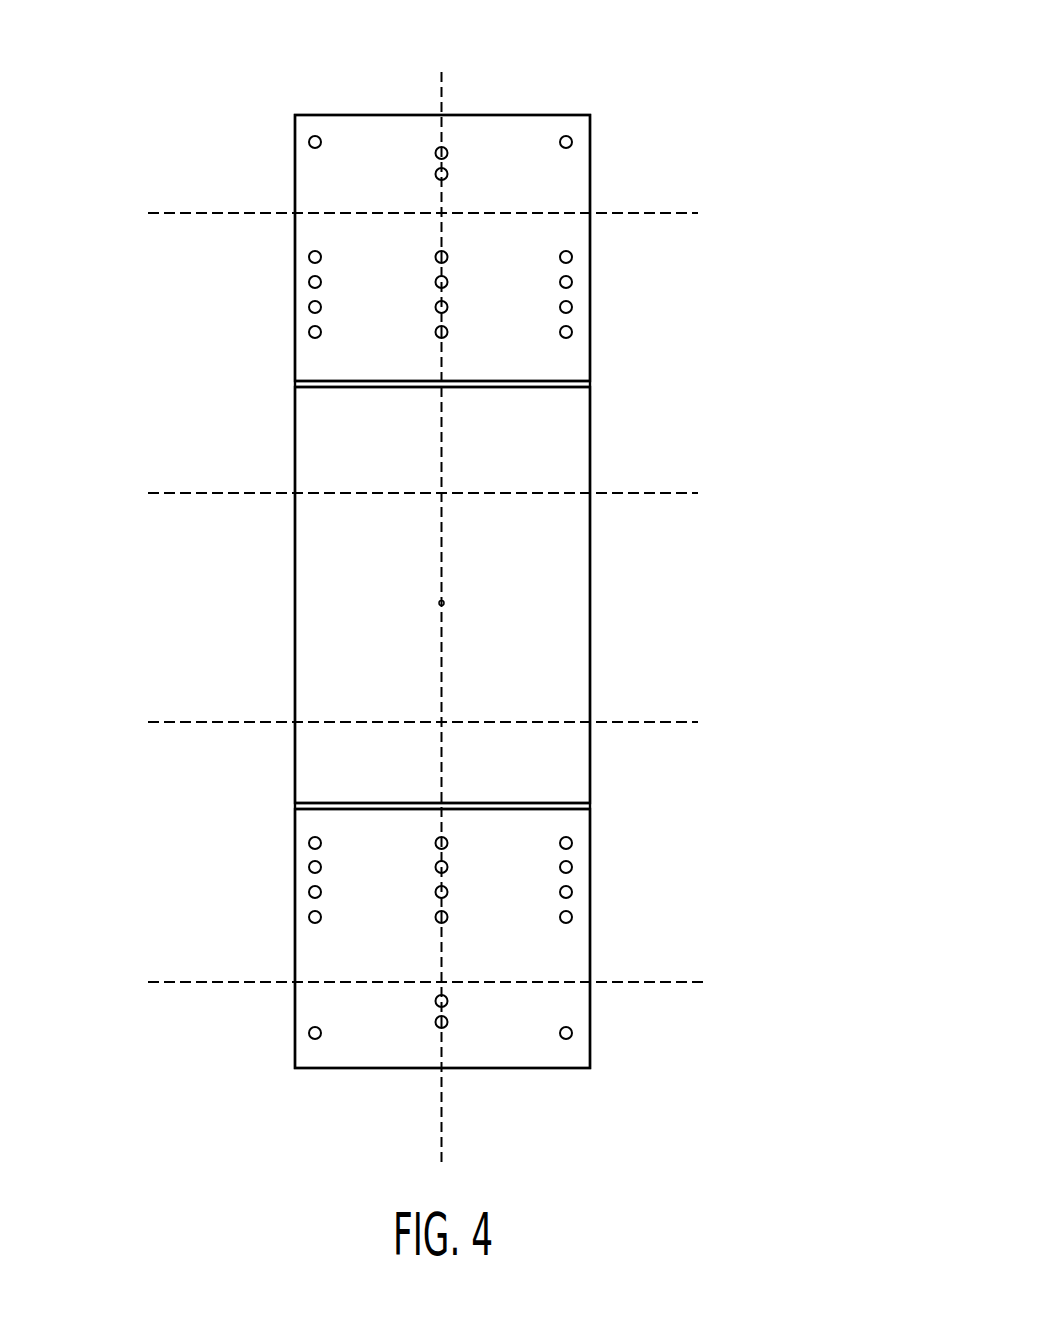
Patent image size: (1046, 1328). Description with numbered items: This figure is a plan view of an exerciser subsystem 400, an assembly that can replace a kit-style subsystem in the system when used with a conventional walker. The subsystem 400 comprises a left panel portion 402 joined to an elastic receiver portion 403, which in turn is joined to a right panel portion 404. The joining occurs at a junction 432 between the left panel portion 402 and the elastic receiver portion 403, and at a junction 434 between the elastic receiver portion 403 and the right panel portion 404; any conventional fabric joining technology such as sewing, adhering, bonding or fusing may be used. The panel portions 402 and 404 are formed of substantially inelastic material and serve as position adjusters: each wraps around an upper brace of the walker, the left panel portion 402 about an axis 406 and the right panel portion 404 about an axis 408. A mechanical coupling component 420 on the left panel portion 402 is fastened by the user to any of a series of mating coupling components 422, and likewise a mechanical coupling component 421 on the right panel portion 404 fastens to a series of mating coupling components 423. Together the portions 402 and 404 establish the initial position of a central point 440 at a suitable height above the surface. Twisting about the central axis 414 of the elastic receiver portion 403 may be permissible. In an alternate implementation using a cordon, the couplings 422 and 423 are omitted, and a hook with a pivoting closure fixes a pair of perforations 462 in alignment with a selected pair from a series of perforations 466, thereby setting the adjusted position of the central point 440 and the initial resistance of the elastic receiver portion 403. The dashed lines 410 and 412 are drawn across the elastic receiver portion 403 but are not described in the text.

The subsystem 400 is at (92, 70).
The left panel portion 402 is at (484, 114).
The elastic receiver portion 403 is at (591, 602).
The right panel portion 404 is at (496, 1069).
The axis 406 is at (662, 212).
The axis 408 is at (648, 981).
The second fold line 410 is at (648, 492).
The third fold line 412 is at (648, 721).
The central axis 414 is at (440, 88).
The mechanical coupling component 420 is at (294, 136).
The mechanical coupling component 421 is at (574, 139).
The mating coupling components 422 is at (270, 257).
The mating coupling components 423 is at (597, 257).
The junction 432 is at (580, 387).
The junction 434 is at (580, 803).
The central point 440 is at (446, 602).
The pair of perforations 462 is at (470, 175).
The series of perforations 466 is at (461, 250).